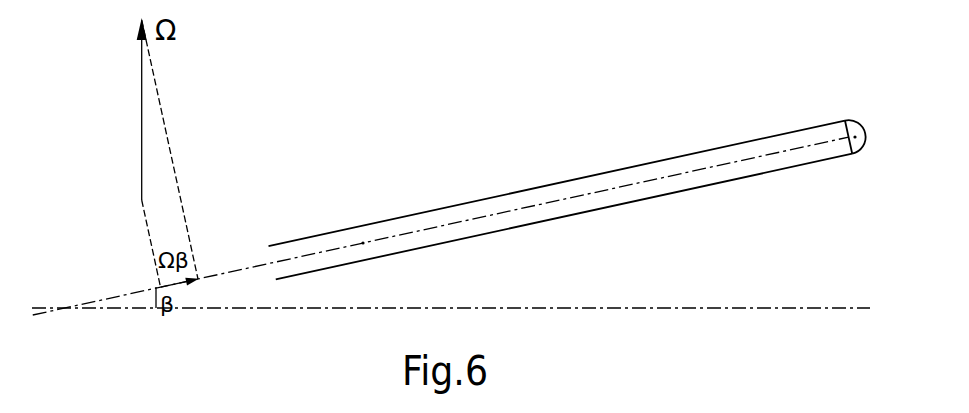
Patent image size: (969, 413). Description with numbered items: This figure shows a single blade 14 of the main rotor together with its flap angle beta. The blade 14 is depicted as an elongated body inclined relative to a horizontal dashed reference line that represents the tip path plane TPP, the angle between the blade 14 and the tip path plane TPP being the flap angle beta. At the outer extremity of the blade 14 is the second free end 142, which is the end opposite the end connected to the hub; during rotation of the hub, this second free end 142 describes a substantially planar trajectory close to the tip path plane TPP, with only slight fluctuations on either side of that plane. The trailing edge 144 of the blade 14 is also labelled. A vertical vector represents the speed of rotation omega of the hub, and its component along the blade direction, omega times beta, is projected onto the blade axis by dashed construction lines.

The blade 14 is at (615, 172).
The second free end 142 is at (855, 137).
The trailing edge 144 is at (363, 243).
The tip path plane TPP is at (758, 308).